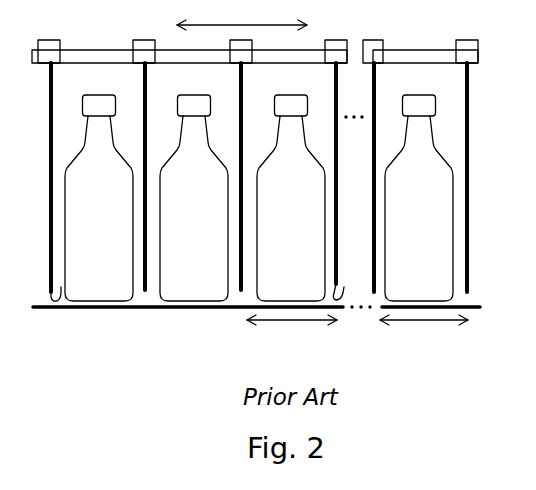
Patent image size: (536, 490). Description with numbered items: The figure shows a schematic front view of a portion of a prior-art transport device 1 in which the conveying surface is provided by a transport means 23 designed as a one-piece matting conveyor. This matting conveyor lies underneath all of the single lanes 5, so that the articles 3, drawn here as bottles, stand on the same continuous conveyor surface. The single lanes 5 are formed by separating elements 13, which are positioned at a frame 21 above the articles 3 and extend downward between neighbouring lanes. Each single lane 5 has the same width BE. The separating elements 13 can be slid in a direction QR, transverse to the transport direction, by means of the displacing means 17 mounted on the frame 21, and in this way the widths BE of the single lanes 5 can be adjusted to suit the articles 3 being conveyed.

The transport device 1 is at (104, 333).
The articles 3 is at (118, 149).
The single lanes 5 is at (50, 298).
The separating elements 13 is at (373, 210).
The displacing means 17 is at (368, 46).
The frame 21 is at (115, 58).
The transport means 23 is at (155, 311).